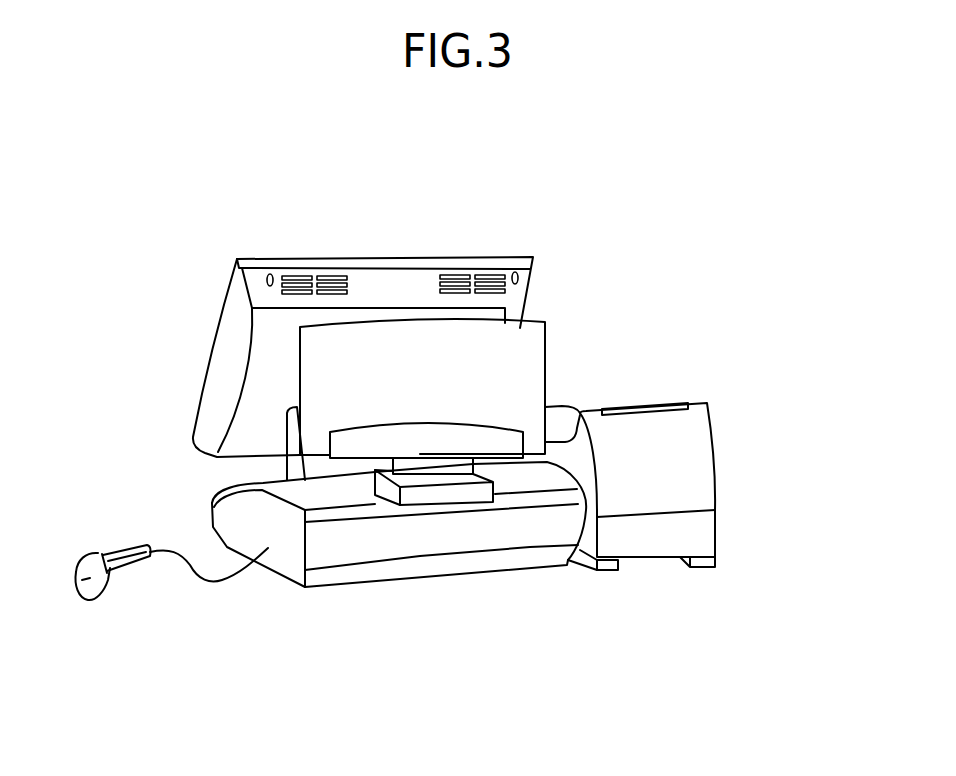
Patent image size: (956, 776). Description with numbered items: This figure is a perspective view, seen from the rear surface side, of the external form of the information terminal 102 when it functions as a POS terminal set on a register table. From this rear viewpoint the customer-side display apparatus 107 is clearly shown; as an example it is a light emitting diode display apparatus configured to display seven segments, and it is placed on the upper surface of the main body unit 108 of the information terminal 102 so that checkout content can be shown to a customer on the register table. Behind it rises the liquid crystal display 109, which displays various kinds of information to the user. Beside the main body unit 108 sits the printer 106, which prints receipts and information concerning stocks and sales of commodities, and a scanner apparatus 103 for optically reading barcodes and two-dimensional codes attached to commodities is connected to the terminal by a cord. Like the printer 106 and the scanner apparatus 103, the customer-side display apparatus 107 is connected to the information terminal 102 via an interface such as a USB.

The information terminal 102 is at (246, 182).
The scanner apparatus 103 is at (125, 568).
The printer 106 is at (690, 476).
The customer-side display apparatus 107 is at (550, 369).
The main body unit 108 is at (350, 490).
The liquid crystal display 109 is at (386, 262).